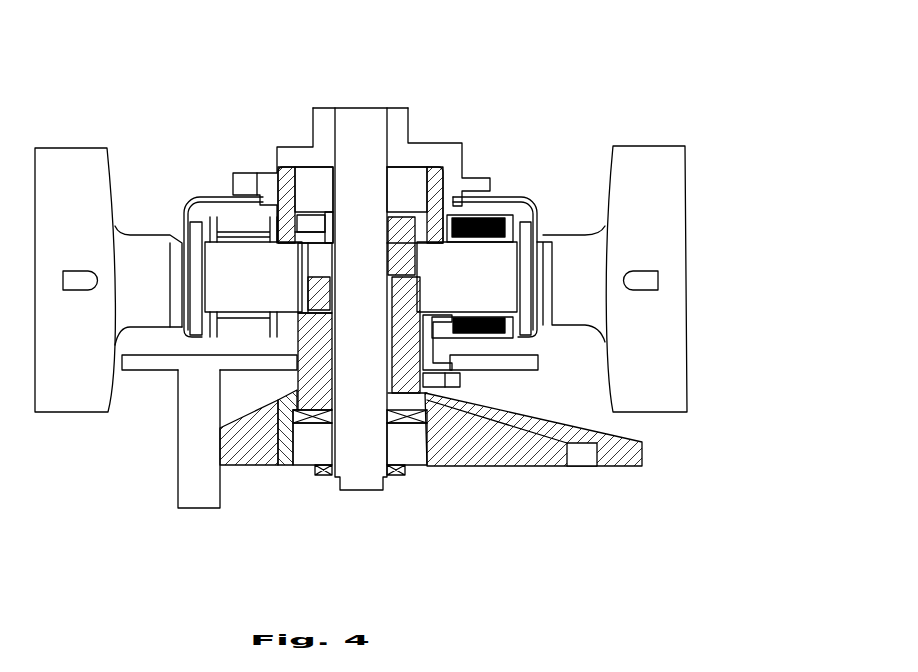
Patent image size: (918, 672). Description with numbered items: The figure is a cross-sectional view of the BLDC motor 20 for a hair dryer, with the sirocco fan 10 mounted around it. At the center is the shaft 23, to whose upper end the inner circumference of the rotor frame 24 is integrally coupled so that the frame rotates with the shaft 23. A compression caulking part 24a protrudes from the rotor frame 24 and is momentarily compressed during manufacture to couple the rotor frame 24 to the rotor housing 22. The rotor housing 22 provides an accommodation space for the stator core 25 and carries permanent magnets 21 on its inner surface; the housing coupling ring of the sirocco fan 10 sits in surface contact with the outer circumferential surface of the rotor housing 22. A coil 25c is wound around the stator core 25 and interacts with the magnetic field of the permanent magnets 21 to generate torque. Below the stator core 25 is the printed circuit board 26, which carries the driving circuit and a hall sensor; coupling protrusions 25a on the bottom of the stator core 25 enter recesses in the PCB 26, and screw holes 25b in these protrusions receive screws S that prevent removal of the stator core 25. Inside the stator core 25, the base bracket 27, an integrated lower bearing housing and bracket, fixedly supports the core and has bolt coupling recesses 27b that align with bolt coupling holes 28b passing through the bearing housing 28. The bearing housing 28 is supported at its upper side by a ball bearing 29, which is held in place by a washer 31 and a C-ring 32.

The BLDC motor 20 is at (207, 52).
The sirocco fan 10 is at (75, 153).
The permanent magnets 21 is at (528, 232).
The rotor housing 22 is at (373, 247).
The shaft 23 is at (361, 114).
The rotor frame 24 is at (440, 149).
The compression caulking part 24a is at (245, 178).
The stator core 25 is at (487, 300).
The coupling protrusions 25a is at (475, 347).
The screw holes 25b is at (478, 333).
The coil 25c is at (488, 218).
The printed circuit board 26 is at (153, 365).
The base bracket 27 is at (407, 433).
The bolt coupling recesses 27b is at (325, 390).
The bearing housing 28 is at (403, 230).
The bolt coupling holes 28b is at (307, 220).
The ball bearing 29 is at (312, 175).
The washer 31 is at (307, 430).
The C-ring 32 is at (318, 474).
The screws S is at (450, 378).